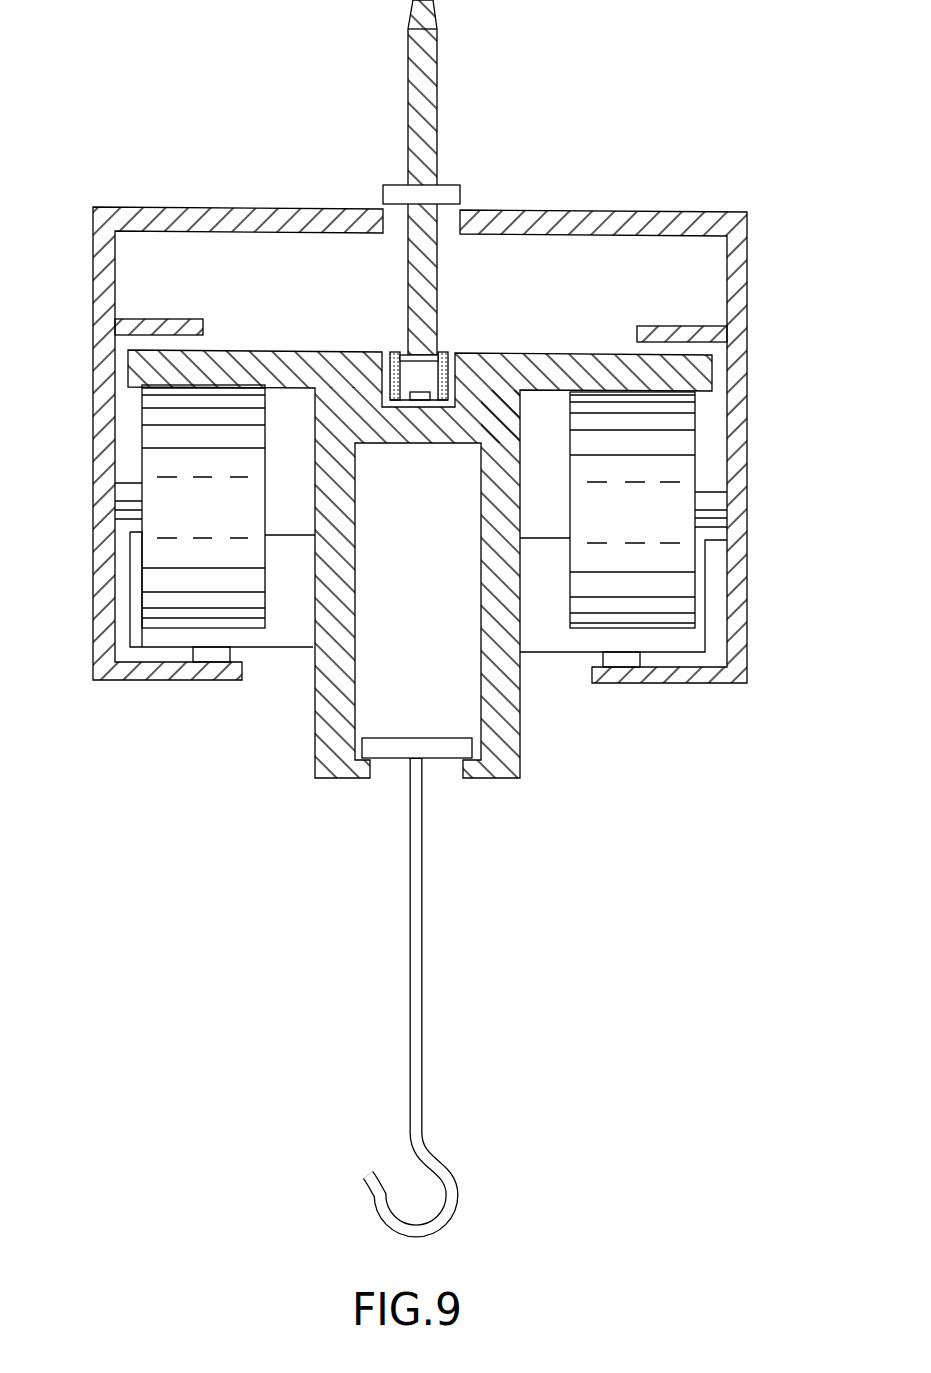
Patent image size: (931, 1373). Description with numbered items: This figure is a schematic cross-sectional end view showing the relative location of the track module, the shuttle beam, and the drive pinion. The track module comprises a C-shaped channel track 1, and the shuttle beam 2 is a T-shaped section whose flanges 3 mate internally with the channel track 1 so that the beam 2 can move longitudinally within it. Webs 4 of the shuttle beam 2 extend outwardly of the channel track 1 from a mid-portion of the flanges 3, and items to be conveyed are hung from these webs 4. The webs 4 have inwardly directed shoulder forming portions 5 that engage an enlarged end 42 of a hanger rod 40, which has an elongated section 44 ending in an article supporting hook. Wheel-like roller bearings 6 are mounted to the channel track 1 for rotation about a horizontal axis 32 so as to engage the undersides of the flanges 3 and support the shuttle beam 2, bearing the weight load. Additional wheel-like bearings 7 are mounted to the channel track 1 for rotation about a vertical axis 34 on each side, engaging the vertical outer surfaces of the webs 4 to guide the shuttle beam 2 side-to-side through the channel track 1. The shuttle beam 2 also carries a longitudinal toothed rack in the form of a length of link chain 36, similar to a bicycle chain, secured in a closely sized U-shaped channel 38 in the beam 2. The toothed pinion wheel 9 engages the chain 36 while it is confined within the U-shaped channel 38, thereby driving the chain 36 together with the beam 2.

The channel track 1 is at (757, 318).
The shuttle beam 2 is at (420, 563).
The flanges 3 is at (220, 363).
The webs 4 is at (322, 718).
The shoulder forming portions 5 is at (358, 775).
The roller bearings 6 is at (155, 435).
The wheel-like bearings 7 is at (142, 637).
The toothed pinion wheel 9 is at (430, 120).
The horizontal axis 32 is at (123, 493).
The vertical axis 34 is at (207, 657).
The link chain 36 is at (450, 353).
The U-shaped channel 38 is at (423, 407).
The hanger rod 40 is at (456, 1002).
The enlarged end 42 is at (375, 748).
The elongated section 44 is at (417, 998).